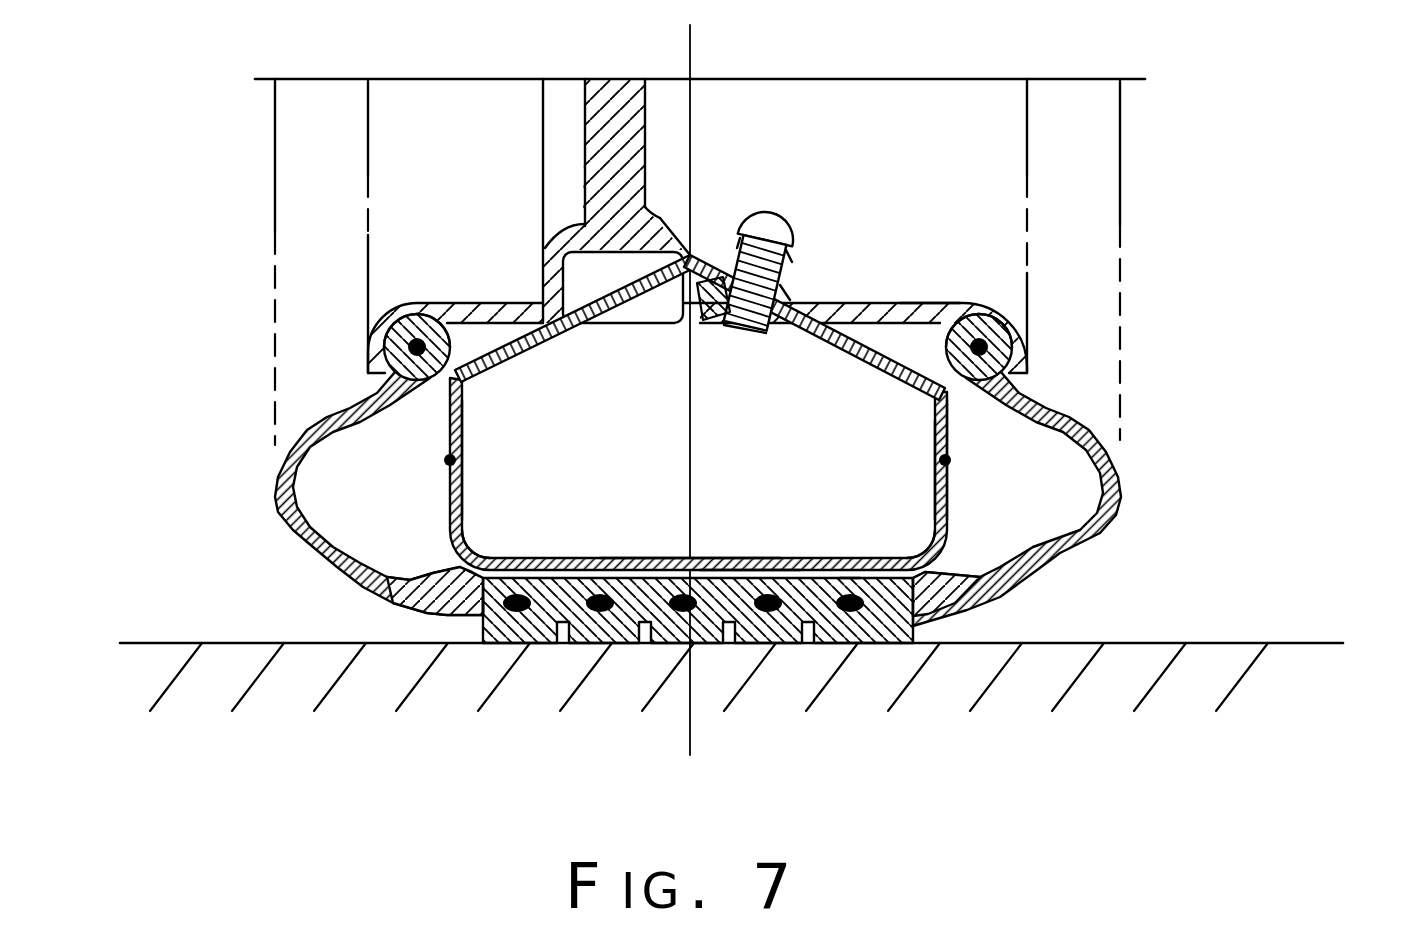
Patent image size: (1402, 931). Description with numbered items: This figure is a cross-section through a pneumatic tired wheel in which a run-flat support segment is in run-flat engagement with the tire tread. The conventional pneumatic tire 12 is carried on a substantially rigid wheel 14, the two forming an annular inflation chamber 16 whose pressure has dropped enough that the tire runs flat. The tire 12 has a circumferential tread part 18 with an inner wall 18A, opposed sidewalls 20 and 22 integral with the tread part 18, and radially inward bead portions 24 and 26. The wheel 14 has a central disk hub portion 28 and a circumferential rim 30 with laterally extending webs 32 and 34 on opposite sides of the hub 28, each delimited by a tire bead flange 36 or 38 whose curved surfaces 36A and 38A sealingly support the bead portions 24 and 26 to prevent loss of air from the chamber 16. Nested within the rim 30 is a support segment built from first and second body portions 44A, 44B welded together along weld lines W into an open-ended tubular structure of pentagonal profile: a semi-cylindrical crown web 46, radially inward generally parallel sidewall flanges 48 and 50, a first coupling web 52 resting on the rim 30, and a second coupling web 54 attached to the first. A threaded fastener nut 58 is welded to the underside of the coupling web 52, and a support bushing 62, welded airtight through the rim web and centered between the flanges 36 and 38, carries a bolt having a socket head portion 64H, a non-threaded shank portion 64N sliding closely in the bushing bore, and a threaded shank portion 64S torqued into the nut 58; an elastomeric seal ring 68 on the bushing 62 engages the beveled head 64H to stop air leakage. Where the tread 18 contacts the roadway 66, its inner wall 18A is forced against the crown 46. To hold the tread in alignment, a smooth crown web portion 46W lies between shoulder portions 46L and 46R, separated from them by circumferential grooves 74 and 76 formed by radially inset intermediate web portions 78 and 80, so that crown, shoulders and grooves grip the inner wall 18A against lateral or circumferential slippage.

The pneumatic tire 12 is at (275, 127).
The wheel 14 is at (1033, 112).
The inflation chamber 16 is at (1058, 507).
The tread part 18 is at (883, 627).
The inner wall of the tire tread 18A is at (563, 573).
The sidewall 20 is at (293, 423).
The sidewall 22 is at (1115, 445).
The bead portion 24 is at (370, 345).
The bead portion 26 is at (1025, 358).
The disk hub portion 28 is at (590, 137).
The rim 30 is at (664, 216).
The web 32 is at (923, 303).
The web 34 is at (493, 302).
The tire bead flange 36 is at (370, 352).
The curved surface 36A is at (436, 323).
The tire bead flange 38 is at (1023, 358).
The curved surface 38A is at (970, 305).
The first body portion 44A is at (465, 537).
The second body portion 44B is at (937, 418).
The crown web portion 46 is at (690, 558).
The crown web portion 46W is at (806, 512).
The shoulder portion 46L is at (475, 613).
The shoulder portion 46R is at (934, 559).
The sidewall flange 48 is at (462, 412).
The sidewall flange 50 is at (935, 492).
The first coupling web 52 is at (832, 348).
The second coupling web 54 is at (570, 333).
The threaded fastener nut 58 is at (700, 318).
The support bushing 62 is at (792, 292).
The socket head portion 64H is at (788, 243).
The non-threaded cylindrical shank portion 64N is at (732, 248).
The threaded shank portion 64S is at (729, 316).
The roadway 66 is at (1236, 642).
The elastomeric seal ring 68 is at (790, 256).
The circumferential groove 74 is at (517, 580).
The circumferential groove 76 is at (863, 567).
The first intermediate web portion 78 is at (492, 570).
The second intermediate web portion 80 is at (862, 567).
The weld lines W is at (445, 460).